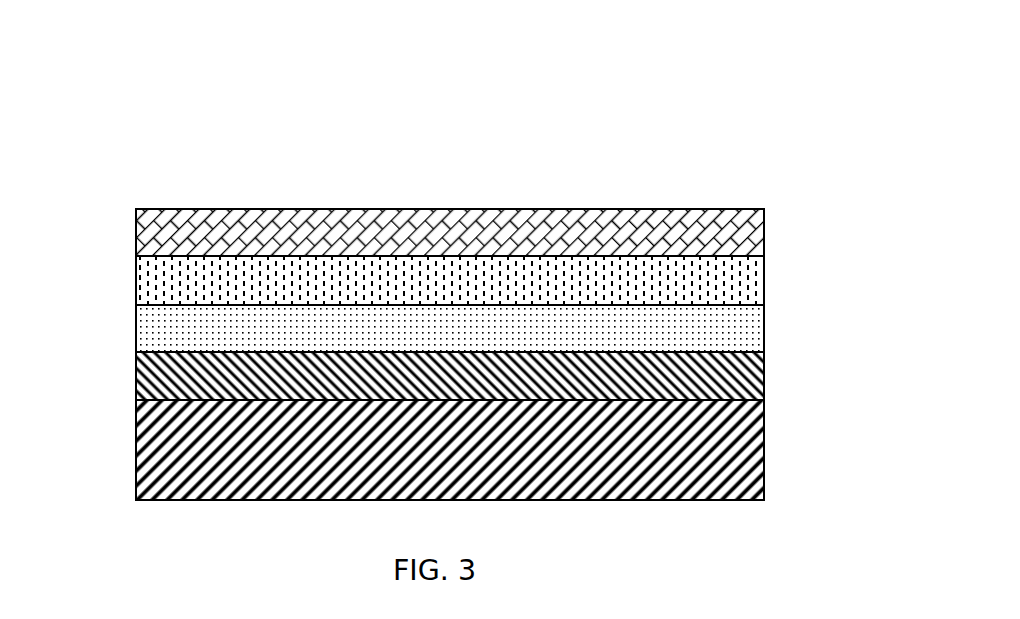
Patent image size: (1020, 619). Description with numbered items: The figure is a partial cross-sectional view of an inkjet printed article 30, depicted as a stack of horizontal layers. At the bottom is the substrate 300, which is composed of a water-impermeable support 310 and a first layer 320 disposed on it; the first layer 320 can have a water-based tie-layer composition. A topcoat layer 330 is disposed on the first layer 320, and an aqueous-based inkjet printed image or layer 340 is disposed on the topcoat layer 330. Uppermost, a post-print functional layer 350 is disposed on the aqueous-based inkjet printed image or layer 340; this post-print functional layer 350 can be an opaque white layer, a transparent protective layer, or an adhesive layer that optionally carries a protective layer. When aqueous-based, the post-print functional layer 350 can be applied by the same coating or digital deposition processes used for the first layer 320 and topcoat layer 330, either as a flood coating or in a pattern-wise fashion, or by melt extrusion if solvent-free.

The inkjet printed article 30 is at (706, 97).
The substrate 300 is at (462, 347).
The water-impermeable support 310 is at (136, 452).
The first layer 320 is at (136, 374).
The topcoat layer 330 is at (136, 328).
The aqueous-based inkjet printed image or layer 340 is at (136, 285).
The post-print functional layer 350 is at (136, 233).